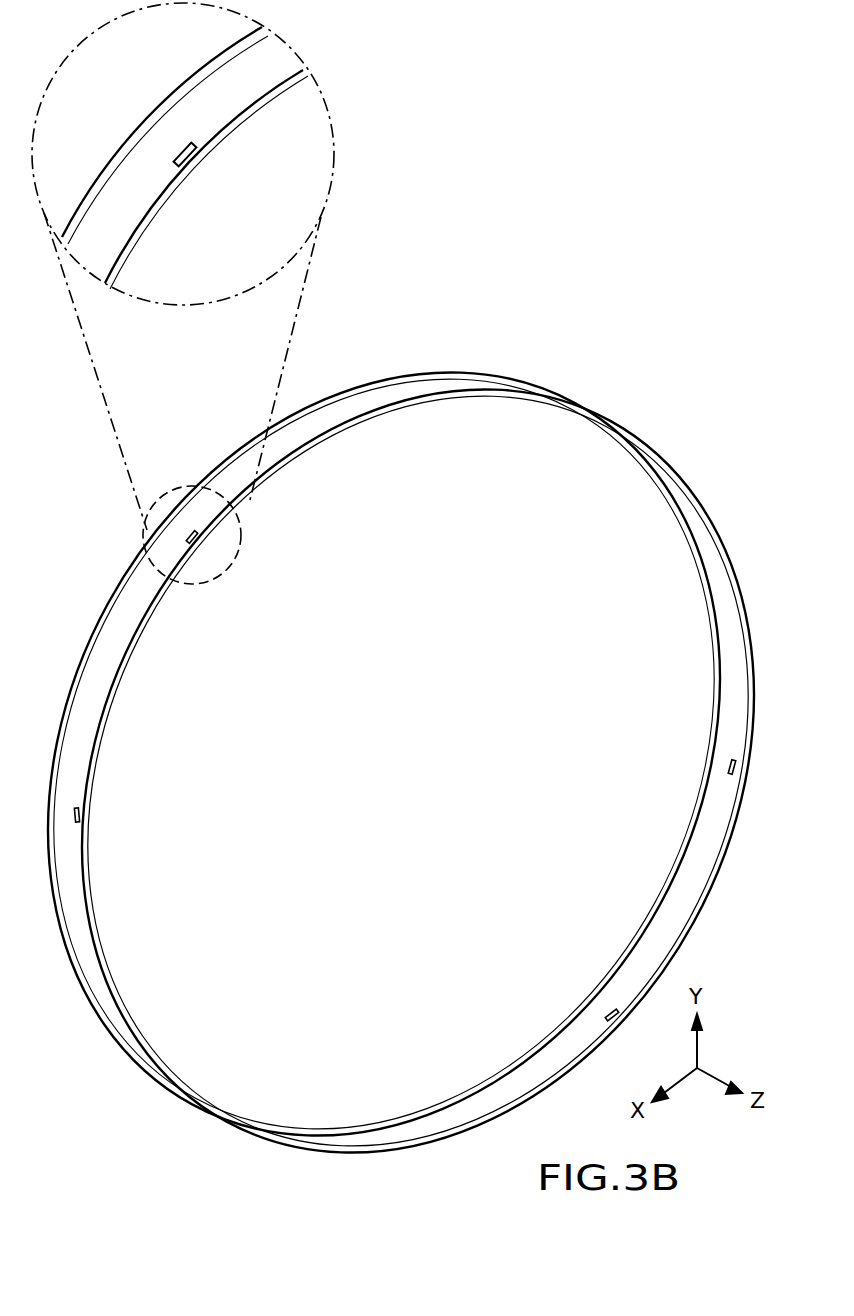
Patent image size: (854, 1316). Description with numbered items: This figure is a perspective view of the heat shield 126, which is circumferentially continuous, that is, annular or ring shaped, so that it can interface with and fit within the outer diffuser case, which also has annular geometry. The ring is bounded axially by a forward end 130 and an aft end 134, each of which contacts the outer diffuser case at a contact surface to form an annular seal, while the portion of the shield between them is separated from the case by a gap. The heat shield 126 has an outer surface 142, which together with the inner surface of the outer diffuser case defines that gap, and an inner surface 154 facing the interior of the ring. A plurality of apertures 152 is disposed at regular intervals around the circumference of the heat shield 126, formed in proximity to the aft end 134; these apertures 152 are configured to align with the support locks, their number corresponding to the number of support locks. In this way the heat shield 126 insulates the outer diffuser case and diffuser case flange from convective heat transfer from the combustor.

The heat shield 126 is at (652, 322).
The forward end 130 is at (118, 150).
The aft end 134 is at (150, 218).
The outer surface 142 is at (115, 640).
The apertures 152 is at (78, 816).
The inner surface 154 is at (632, 983).